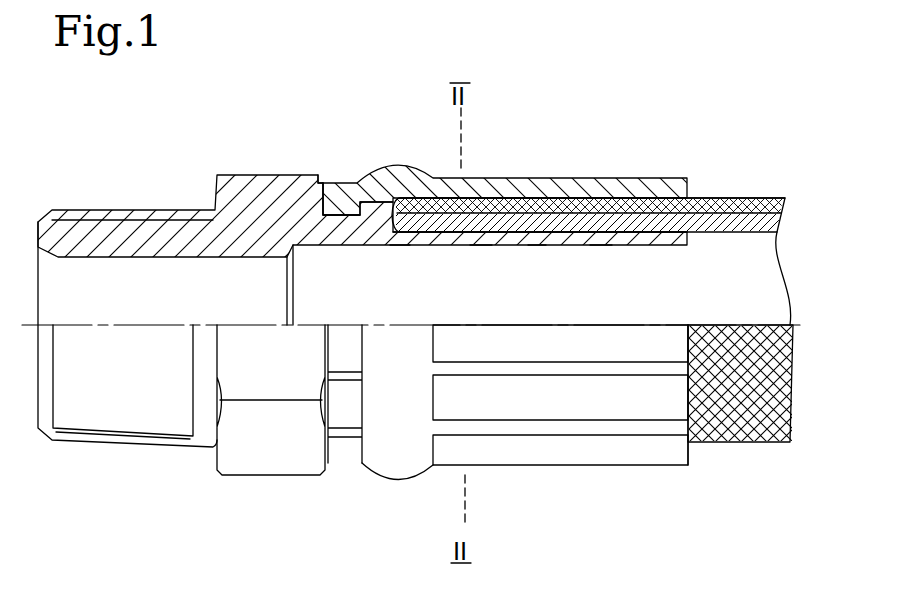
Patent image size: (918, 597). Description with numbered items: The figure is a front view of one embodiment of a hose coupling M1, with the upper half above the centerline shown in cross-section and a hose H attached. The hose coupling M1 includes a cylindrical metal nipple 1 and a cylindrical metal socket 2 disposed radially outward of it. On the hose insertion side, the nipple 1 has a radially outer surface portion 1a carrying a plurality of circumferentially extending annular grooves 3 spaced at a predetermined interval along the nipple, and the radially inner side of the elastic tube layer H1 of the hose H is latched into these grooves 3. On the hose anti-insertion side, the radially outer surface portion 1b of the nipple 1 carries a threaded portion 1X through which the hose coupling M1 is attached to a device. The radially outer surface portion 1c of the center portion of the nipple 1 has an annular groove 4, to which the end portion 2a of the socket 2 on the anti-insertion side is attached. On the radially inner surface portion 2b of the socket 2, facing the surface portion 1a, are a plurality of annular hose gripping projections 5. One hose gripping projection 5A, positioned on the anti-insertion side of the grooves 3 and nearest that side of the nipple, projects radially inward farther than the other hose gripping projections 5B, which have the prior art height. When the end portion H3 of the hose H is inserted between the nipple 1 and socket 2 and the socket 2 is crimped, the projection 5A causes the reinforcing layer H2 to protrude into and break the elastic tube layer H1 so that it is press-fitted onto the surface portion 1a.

The nipple 1 is at (254, 476).
The radially outer surface portion in the hose insertion side 1a is at (571, 235).
The radially outer surface portion in the hose anti-insertion side 1b is at (100, 210).
The threaded portion 1X is at (160, 210).
The radially outer surface portion of the center portion 1c is at (312, 175).
The hose coupling M1 is at (259, 168).
The socket 2 is at (581, 466).
The end portion of the socket 2a is at (338, 183).
The radially inner surface portion of the socket 2b is at (537, 246).
The annular grooves 3 is at (520, 199).
The annular groove 4 is at (341, 198).
The hose gripping projections 5 is at (525, 282).
The hose gripping projection 5A is at (398, 246).
The other hose gripping projections 5B is at (480, 246).
The hose H is at (742, 195).
The elastic tube layer H1 is at (742, 233).
The reinforcing layer H2 is at (712, 206).
The end portion of the hose H3 is at (615, 197).